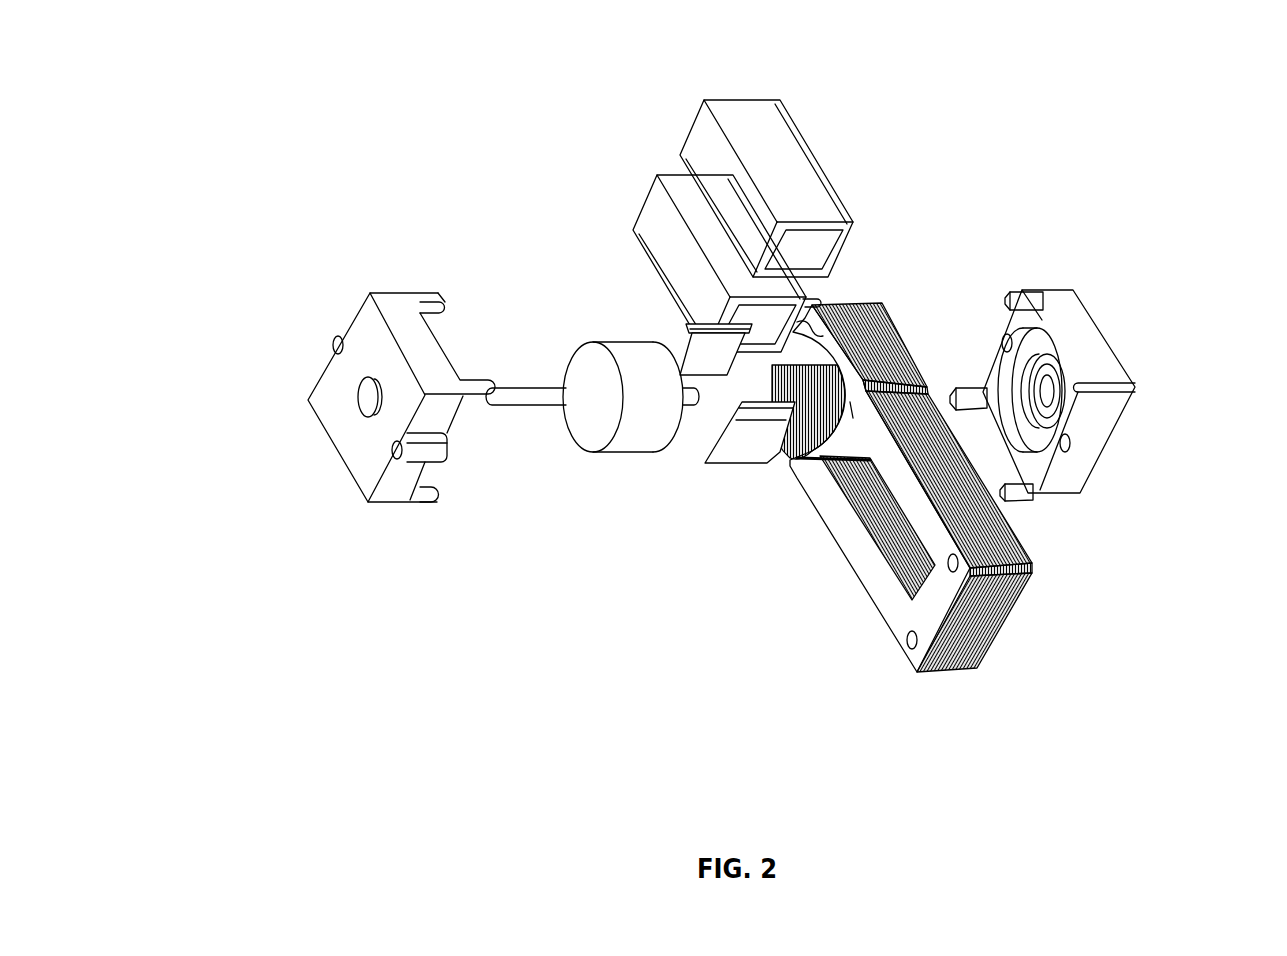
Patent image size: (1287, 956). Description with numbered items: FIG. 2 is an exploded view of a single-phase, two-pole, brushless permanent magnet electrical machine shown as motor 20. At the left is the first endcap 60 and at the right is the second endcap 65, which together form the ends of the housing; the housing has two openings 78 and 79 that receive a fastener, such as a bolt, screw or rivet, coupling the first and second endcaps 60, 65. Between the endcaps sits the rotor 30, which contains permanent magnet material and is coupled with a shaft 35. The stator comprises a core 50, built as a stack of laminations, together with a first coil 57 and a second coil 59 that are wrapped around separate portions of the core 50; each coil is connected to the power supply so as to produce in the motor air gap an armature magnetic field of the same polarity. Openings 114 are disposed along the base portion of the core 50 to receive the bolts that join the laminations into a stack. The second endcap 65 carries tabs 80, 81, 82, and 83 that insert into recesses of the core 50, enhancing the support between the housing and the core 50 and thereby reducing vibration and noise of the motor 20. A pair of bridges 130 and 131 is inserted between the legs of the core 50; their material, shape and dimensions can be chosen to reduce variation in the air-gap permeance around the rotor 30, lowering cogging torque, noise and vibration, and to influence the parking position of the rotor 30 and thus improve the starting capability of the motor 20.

The motor 20 is at (700, 567).
The rotor 30 is at (608, 545).
The shaft 35 is at (485, 568).
The core 50 is at (902, 371).
The first coil 57 is at (664, 211).
The second coil 59 is at (735, 174).
The first endcap 60 is at (322, 520).
The second endcap 65 is at (1133, 282).
The opening 78 is at (242, 212).
The opening 79 is at (358, 525).
The tab 80 is at (1022, 240).
The tab 81 is at (1094, 190).
The tab 82 is at (1146, 565).
The tab 83 is at (1067, 616).
The openings 114 is at (944, 651).
The bridge 130 is at (562, 223).
The bridge 131 is at (746, 575).